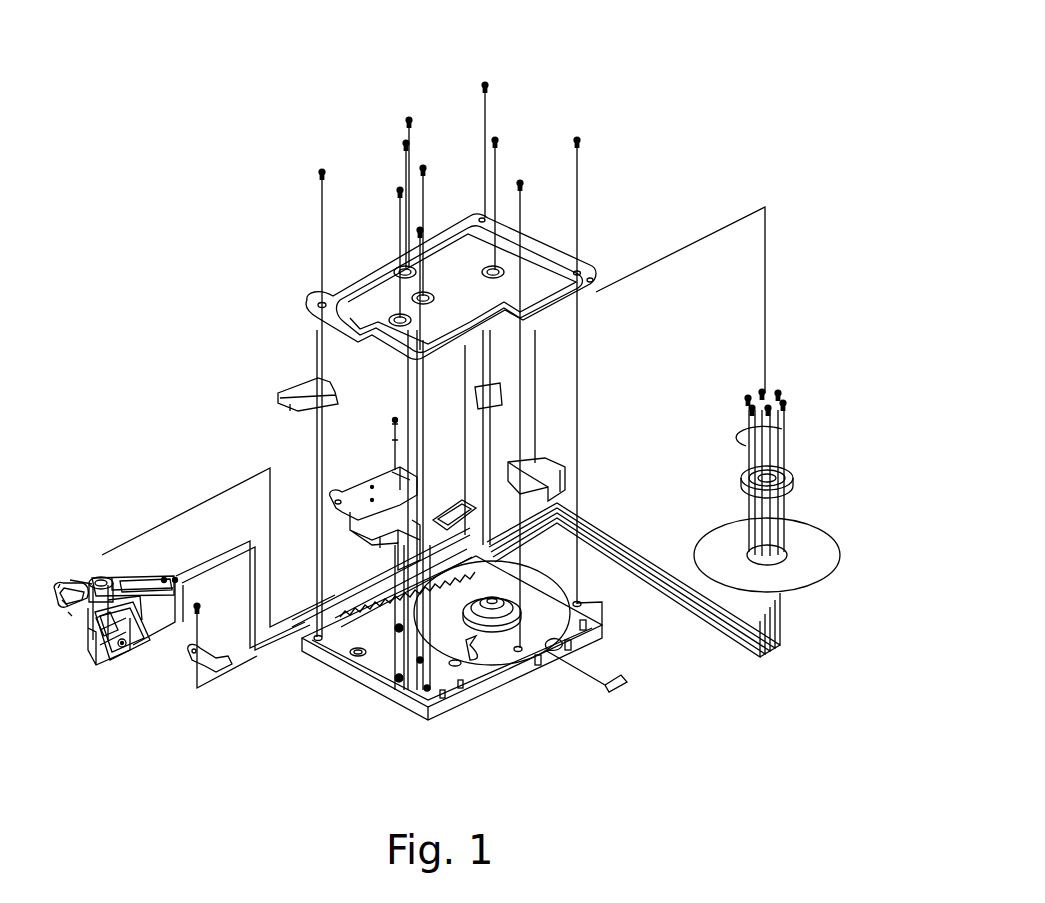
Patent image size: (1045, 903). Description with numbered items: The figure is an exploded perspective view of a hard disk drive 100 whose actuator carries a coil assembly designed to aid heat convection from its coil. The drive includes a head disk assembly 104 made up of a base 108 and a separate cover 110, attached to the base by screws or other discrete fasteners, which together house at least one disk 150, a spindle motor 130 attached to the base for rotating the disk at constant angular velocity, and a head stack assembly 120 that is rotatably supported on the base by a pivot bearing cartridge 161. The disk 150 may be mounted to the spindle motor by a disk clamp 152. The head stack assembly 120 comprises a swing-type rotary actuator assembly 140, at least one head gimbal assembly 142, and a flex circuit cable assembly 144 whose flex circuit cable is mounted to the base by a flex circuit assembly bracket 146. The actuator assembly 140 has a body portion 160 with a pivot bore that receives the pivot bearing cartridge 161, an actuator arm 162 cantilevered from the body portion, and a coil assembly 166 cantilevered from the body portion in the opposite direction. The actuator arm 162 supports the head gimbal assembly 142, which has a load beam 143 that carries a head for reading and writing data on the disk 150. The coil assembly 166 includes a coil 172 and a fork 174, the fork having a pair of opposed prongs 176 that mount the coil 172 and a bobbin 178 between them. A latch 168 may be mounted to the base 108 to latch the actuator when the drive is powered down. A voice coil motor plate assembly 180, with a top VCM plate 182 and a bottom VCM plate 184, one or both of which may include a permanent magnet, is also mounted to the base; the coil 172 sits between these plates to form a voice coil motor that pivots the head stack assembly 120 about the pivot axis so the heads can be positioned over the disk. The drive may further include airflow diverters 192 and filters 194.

The hard disk drive 100 is at (230, 146).
The head disk assembly 104 is at (653, 212).
The base 108 is at (365, 692).
The cover 110 is at (357, 278).
The head stack assembly 120 is at (100, 501).
The spindle motor 130 is at (522, 617).
The rotary actuator assembly 140 is at (80, 640).
The head gimbal assembly 142 is at (166, 576).
The load beam 143 is at (177, 578).
The flex circuit cable assembly 144 is at (125, 600).
The flex circuit assembly bracket 146 is at (135, 645).
The disk 150 is at (818, 596).
The disk clamp 152 is at (745, 468).
The body portion 160 is at (98, 582).
The pivot bearing cartridge 161 is at (108, 580).
The actuator arm 162 is at (128, 588).
The coil assembly 166 is at (62, 579).
The latch 168 is at (196, 651).
The coil 172 is at (62, 600).
The fork 174 is at (97, 625).
The prongs 176 is at (60, 586).
The bobbin 178 is at (78, 578).
The voice coil motor plate assembly 180 is at (372, 466).
The top VCM plate 182 is at (360, 492).
The bottom VCM plate 184 is at (378, 532).
The airflow diverters 192 is at (296, 392).
The filters 194 is at (466, 503).